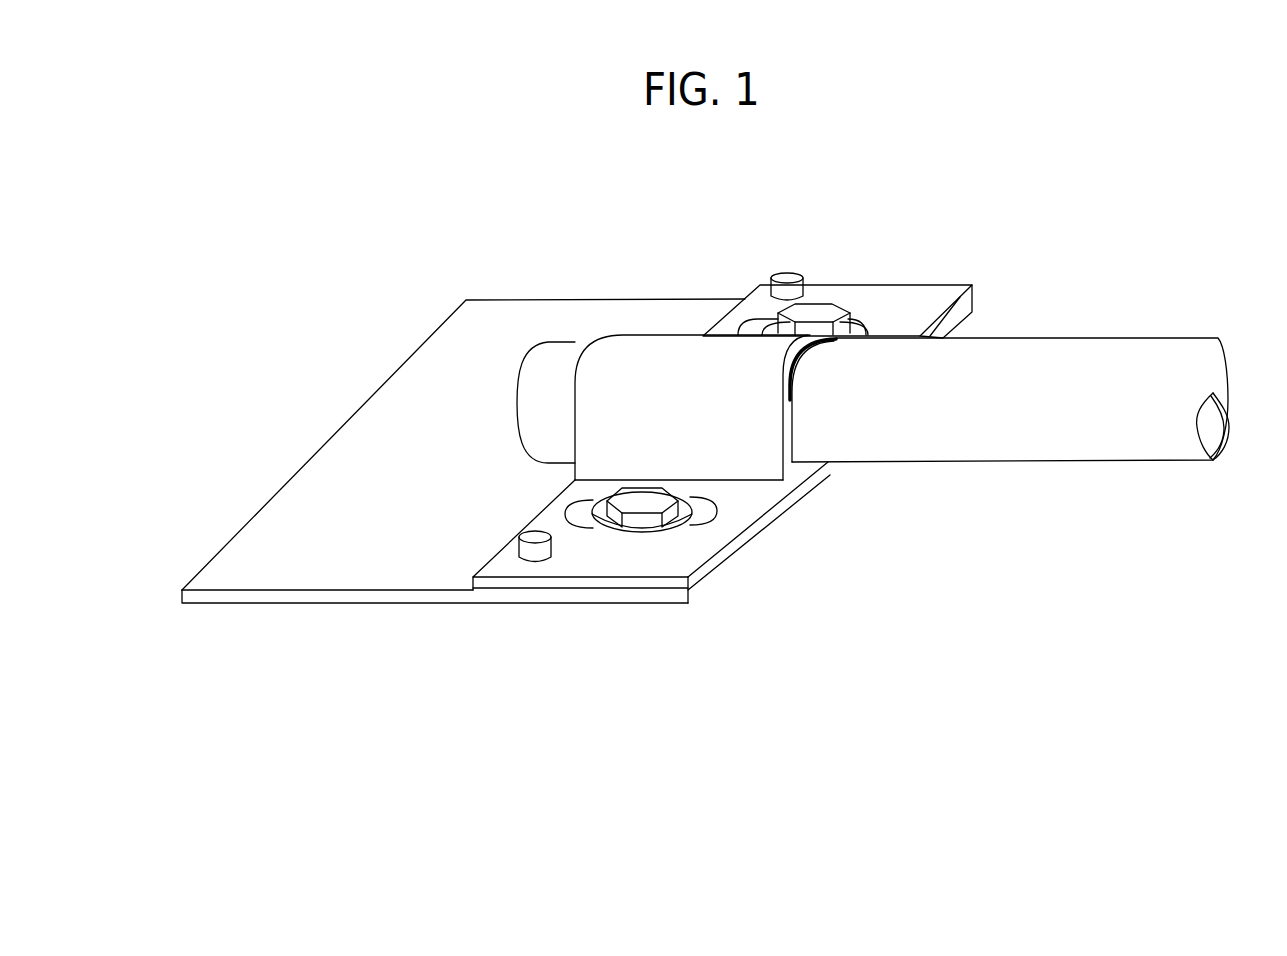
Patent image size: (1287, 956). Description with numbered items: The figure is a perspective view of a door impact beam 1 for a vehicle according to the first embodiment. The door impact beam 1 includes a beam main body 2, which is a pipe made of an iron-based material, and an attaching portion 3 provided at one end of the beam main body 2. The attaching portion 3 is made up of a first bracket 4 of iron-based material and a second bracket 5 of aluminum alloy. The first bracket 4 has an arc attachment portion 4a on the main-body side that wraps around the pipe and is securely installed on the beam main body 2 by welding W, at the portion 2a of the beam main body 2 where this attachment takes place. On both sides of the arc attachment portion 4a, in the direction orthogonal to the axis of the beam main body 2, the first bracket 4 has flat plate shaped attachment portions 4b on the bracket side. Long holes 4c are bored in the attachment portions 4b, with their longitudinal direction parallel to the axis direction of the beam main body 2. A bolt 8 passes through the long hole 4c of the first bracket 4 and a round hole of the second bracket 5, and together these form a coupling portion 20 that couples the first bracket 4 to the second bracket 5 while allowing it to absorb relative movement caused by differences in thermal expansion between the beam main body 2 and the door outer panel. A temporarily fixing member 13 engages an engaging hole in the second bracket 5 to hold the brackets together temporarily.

The door impact beam 1 is at (1139, 332).
The beam main body 2 is at (1065, 437).
The portion where the attachment portion on the main-body side is securely installed 2a is at (750, 417).
The attaching portion 3 is at (757, 266).
The first bracket 4 is at (625, 557).
The arc attachment portion on the main-body side 4a is at (630, 367).
The flat plate shaped attachment portion on the bracket side 4b is at (888, 295).
The long hole 4c is at (937, 332).
The second bracket 5 is at (567, 320).
The bolt 8 is at (842, 300).
The temporarily fixing member 13 is at (780, 280).
The coupling portion 20 is at (842, 297).
The welding W is at (797, 377).